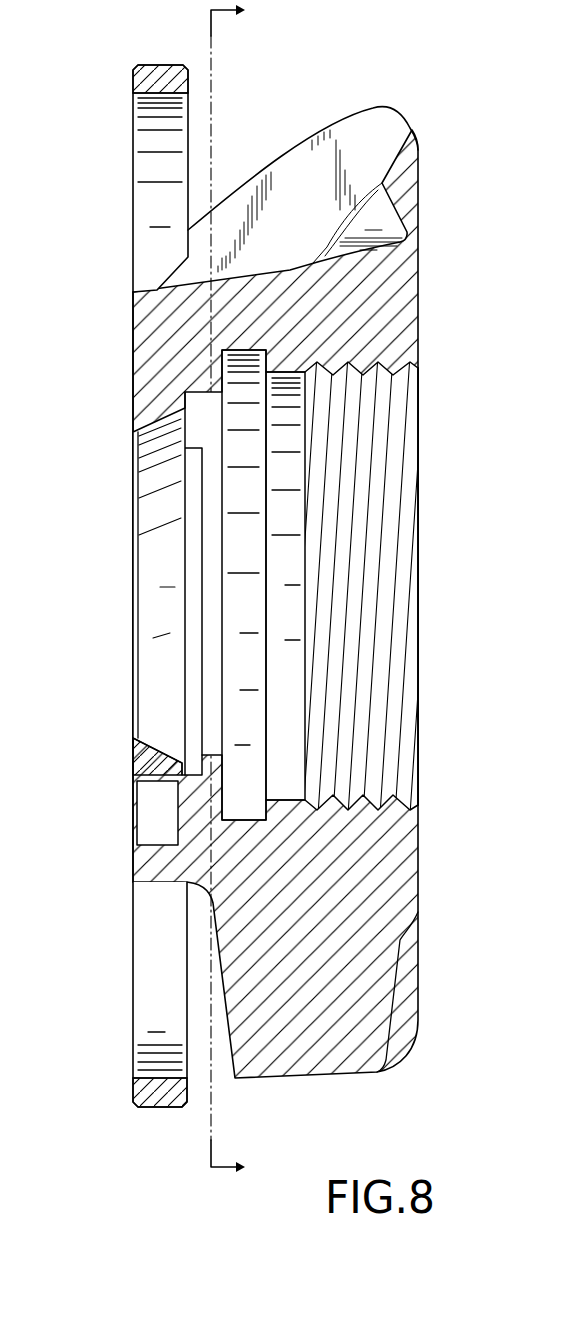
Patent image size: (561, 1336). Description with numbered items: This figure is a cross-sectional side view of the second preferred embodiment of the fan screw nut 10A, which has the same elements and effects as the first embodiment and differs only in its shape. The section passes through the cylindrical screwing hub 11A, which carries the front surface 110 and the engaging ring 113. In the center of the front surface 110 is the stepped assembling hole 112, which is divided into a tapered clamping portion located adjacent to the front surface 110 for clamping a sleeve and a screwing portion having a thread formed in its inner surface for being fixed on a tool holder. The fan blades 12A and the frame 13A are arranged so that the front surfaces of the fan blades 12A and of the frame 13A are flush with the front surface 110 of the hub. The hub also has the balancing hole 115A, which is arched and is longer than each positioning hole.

The fan screw nut 10A is at (108, 293).
The body 11A is at (153, 365).
The fan blades 12A is at (304, 153).
The frame 13A is at (148, 82).
The front surface 110 is at (133, 408).
The assembling hole 112 is at (149, 589).
The engaging ring 113 is at (208, 760).
The annular slot 115A is at (162, 840).